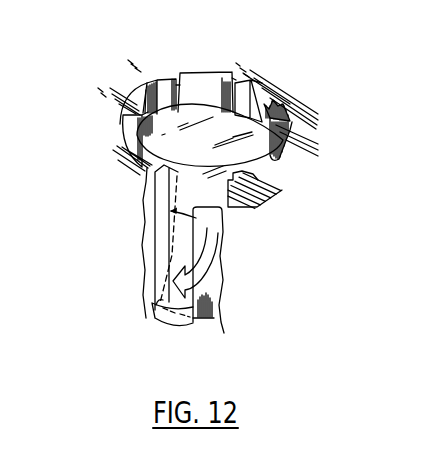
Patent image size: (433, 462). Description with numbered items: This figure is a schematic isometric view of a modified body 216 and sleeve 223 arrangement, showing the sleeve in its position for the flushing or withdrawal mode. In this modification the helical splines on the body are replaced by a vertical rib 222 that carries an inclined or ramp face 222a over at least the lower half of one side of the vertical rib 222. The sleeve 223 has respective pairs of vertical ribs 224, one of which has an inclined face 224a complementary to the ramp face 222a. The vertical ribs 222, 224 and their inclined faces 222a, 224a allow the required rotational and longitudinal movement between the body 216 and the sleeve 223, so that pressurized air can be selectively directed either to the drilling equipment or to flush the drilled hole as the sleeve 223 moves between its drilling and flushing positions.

The body 216 is at (198, 135).
The sleeve 223 is at (122, 80).
The vertical rib 224 is at (177, 175).
The inclined face 224a is at (165, 257).
The vertical rib 222 is at (187, 238).
The inclined face 222a is at (172, 322).